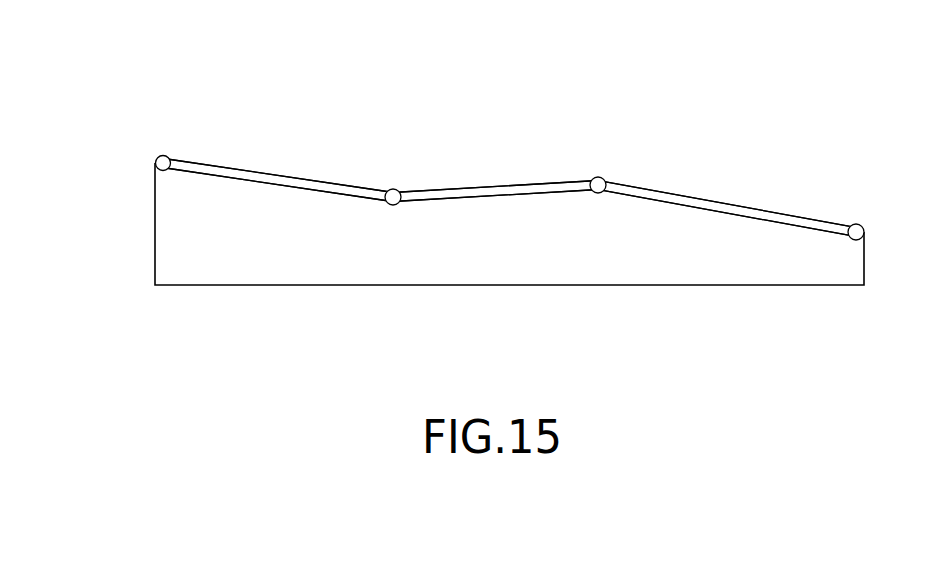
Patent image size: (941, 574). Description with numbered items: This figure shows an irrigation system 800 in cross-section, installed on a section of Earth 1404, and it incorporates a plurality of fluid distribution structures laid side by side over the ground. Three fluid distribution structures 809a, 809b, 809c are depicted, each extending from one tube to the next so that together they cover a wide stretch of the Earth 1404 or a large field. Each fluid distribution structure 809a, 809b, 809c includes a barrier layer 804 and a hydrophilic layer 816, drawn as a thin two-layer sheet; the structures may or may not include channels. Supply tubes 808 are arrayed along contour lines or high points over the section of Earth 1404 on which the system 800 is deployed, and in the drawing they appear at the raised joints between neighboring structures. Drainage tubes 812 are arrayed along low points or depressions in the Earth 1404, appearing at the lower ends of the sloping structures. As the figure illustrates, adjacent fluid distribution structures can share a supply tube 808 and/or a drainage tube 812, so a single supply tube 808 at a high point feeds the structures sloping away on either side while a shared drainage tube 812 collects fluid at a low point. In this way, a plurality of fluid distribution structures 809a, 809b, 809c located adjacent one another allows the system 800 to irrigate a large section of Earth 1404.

The irrigation system 800 is at (582, 95).
The barrier layer 804 is at (200, 176).
The supply tube 808 is at (158, 158).
The fluid distribution structure 809a is at (203, 163).
The fluid distribution structure 809b is at (560, 182).
The fluid distribution structure 809c is at (708, 200).
The drainage tube 812 is at (395, 189).
The hydrophilic layer 816 is at (270, 175).
The section of Earth 1404 is at (275, 268).